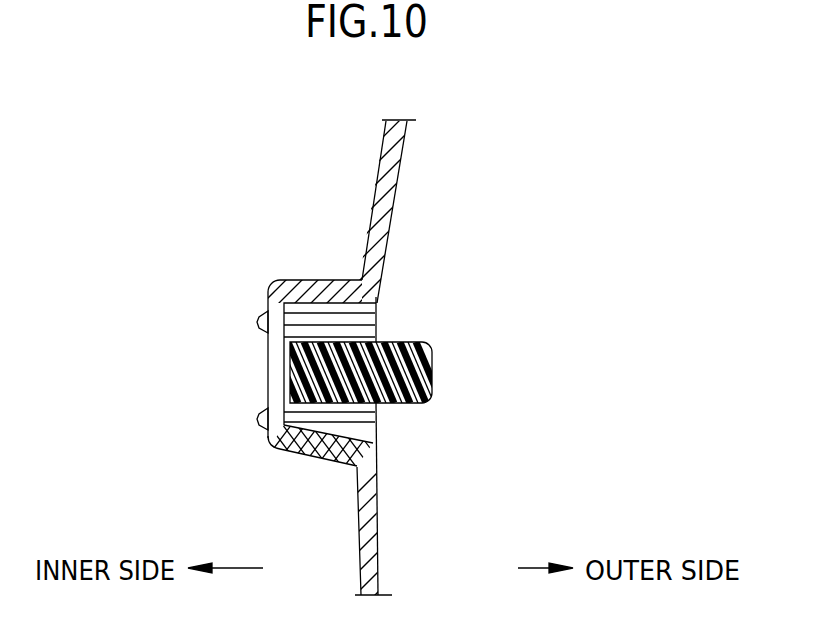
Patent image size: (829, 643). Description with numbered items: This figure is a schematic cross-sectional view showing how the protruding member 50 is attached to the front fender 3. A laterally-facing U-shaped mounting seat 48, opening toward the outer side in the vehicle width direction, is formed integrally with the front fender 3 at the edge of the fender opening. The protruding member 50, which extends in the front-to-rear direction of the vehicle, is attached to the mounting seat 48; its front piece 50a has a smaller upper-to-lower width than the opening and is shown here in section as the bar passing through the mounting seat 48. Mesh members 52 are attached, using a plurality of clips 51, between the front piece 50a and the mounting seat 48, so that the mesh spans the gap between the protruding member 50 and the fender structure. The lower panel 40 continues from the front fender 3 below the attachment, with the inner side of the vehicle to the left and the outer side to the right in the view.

The front fender 3 is at (405, 160).
The bracket panel 40 is at (377, 481).
The mounting seat 48 is at (295, 282).
The protruding member 50 is at (412, 338).
The front piece 50a is at (433, 366).
The clips 51 is at (260, 327).
The mesh members 52 is at (333, 303).